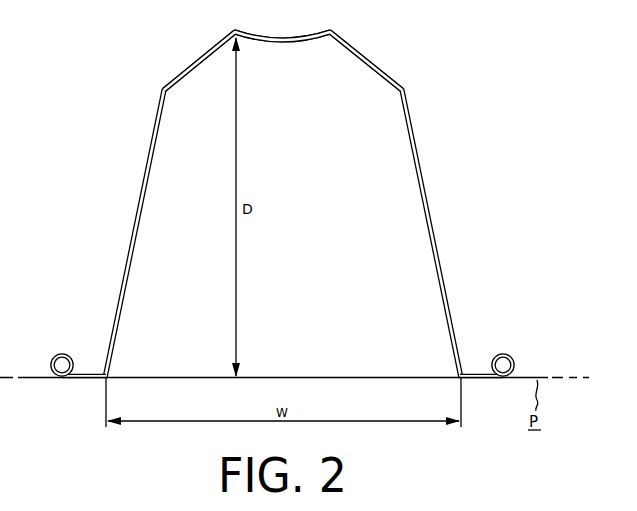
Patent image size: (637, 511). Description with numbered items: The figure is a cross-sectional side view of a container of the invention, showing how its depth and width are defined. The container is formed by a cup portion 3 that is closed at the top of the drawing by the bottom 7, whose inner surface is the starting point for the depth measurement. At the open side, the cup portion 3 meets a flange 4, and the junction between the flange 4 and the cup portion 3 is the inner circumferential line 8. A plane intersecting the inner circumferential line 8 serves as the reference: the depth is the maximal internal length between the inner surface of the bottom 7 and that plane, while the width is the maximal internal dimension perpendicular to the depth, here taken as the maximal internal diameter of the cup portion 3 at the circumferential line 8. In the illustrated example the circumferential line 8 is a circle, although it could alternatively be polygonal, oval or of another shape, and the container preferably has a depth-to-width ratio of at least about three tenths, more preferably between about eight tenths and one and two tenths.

The cup portion 3 is at (430, 194).
The bottom 7 is at (363, 58).
The flange 4 is at (472, 377).
The inner circumferential line 8 is at (104, 380).